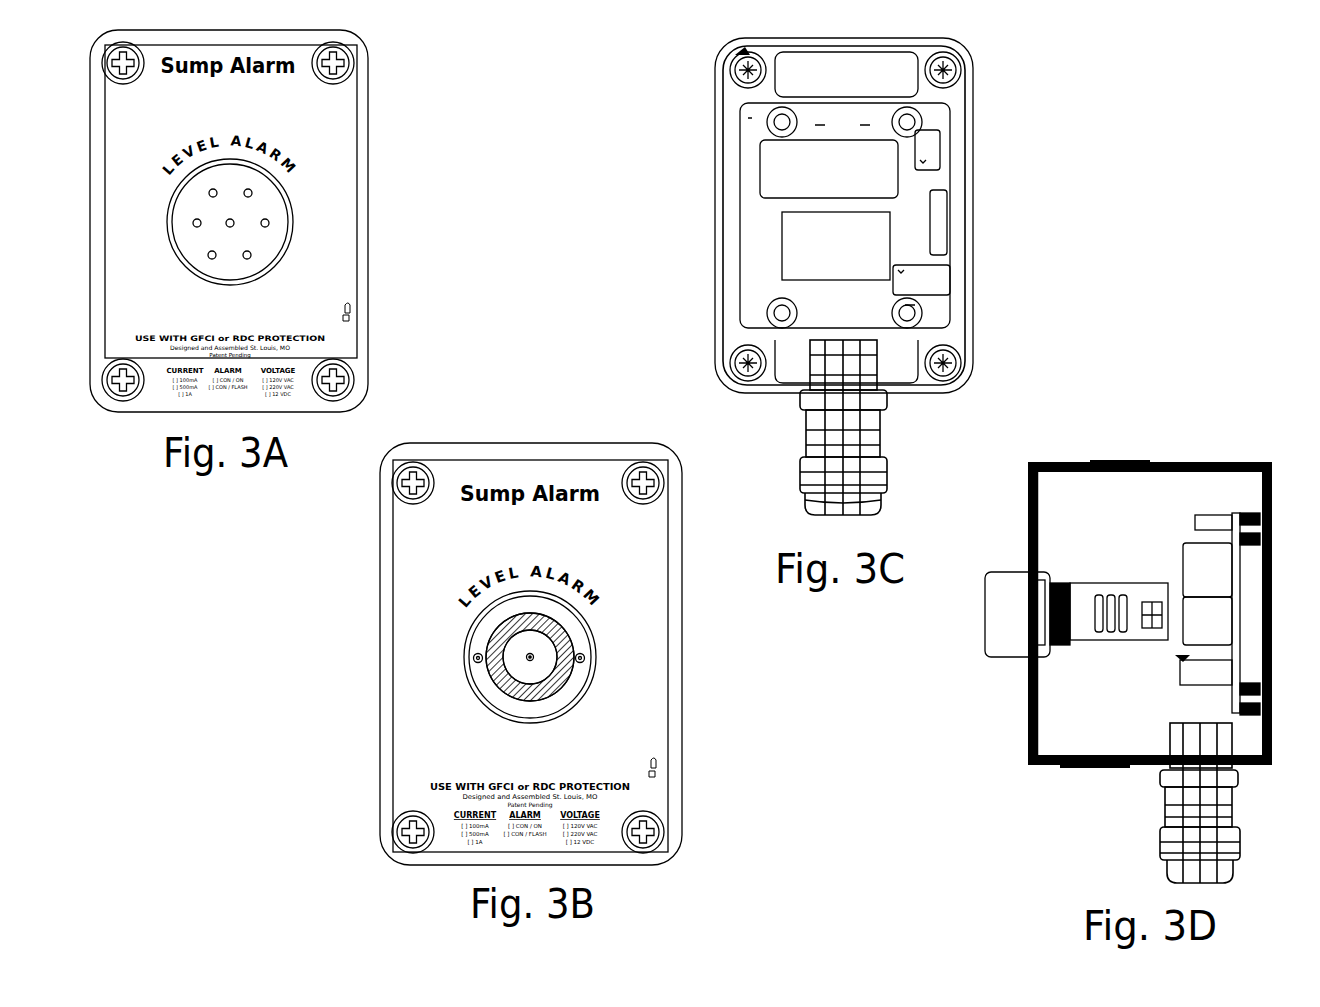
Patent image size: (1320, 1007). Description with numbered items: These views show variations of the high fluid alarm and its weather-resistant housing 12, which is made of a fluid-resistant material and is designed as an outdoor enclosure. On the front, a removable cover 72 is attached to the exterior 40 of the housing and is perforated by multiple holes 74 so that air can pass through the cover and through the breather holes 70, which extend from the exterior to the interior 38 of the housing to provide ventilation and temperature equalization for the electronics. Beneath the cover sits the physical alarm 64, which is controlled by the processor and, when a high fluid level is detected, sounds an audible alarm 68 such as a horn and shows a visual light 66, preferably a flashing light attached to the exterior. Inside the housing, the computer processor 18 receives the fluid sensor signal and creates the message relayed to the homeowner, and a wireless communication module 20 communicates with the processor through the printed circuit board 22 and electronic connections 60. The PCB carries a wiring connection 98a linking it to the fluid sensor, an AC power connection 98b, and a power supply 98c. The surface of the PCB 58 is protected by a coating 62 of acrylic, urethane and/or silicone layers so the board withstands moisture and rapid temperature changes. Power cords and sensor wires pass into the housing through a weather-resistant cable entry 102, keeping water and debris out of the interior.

In FIG. 3A, the housing 12 is at (392, 100).
In FIG. 3C, the computer processor 18 is at (783, 178).
In FIG. 3C, the wireless communication module 20 is at (940, 218).
In FIG. 3D, the printed circuit board 22 is at (1235, 547).
In FIG. 3D, the interior 38 is at (1096, 722).
In FIG. 3A, the exterior 40 is at (340, 302).
In FIG. 3D, the exterior 40 is at (1030, 540).
In FIG. 3C, the surface of the PCB 58 is at (752, 323).
In FIG. 3D, the electronic connections 60 is at (1203, 655).
In FIG. 3C, the coating 62 is at (768, 300).
In FIG. 3D, the physical alarm 64 is at (1048, 607).
In FIG. 3B, the visual light 66 is at (590, 627).
In FIG. 3B, the audible alarm 68 is at (545, 672).
In FIG. 3B, the breather holes 70 is at (473, 658).
In FIG. 3A, the cover 72 is at (262, 210).
In FIG. 3D, the cover 72 is at (1005, 673).
In FIG. 3A, the holes 74 is at (251, 255).
In FIG. 3C, the wiring connection 98a is at (932, 153).
In FIG. 3C, the AC power connection 98b is at (937, 283).
In FIG. 3C, the power supply 98c is at (782, 243).
In FIG. 3D, the weather-resistant cable entry 102 is at (1180, 778).